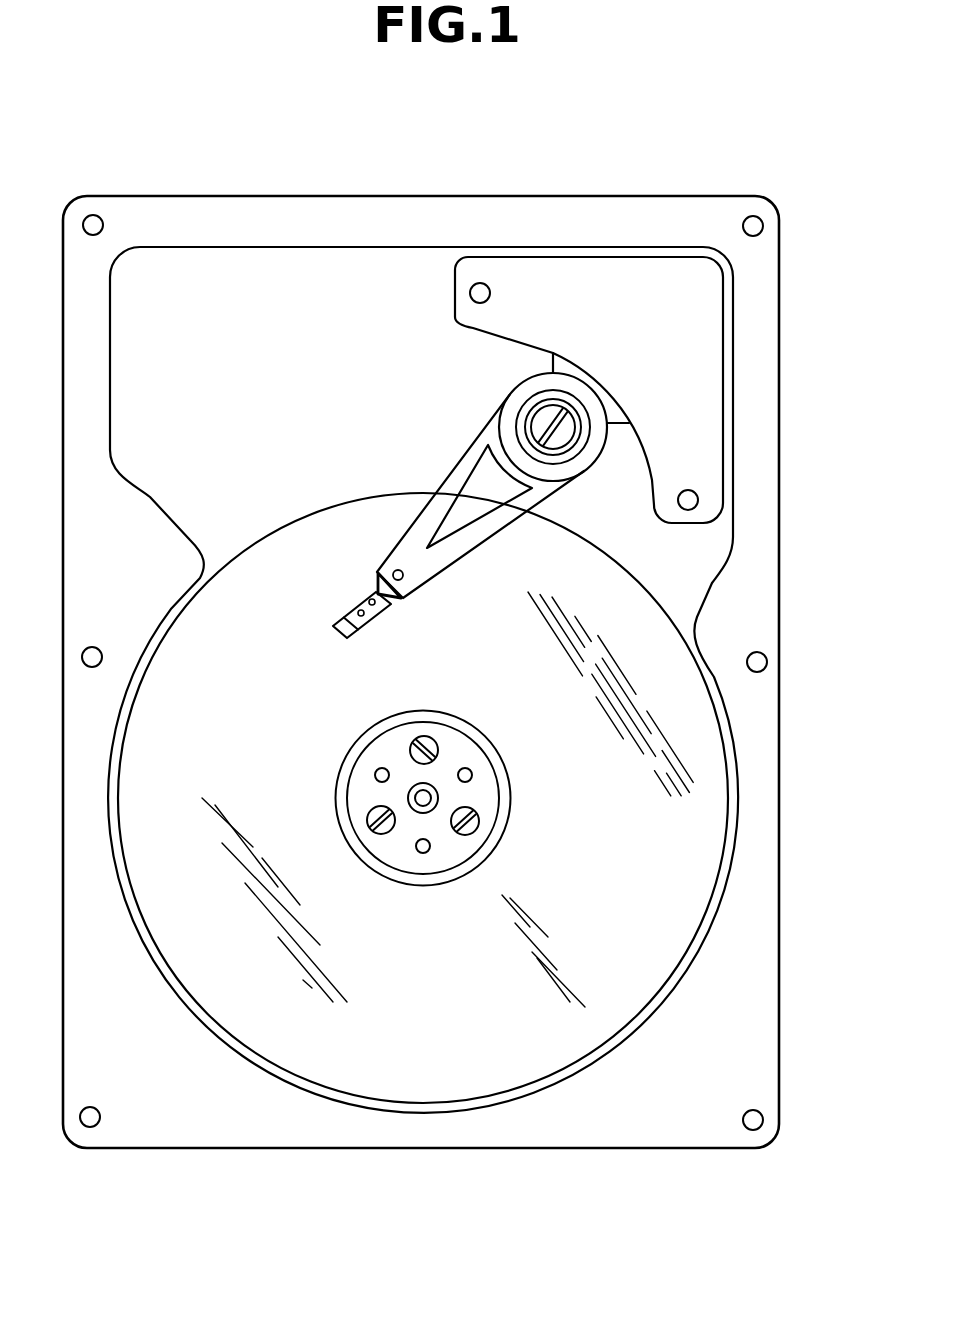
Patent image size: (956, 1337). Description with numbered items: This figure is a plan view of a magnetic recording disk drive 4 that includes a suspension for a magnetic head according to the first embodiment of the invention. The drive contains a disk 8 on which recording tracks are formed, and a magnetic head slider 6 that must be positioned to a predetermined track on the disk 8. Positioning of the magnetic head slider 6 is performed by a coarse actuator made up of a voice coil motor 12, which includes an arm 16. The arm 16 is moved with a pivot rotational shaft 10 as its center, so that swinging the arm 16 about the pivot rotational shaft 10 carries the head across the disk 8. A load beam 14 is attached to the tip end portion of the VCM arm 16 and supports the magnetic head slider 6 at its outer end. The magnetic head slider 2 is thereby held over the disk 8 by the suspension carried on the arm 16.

The magnetic head slider 2 is at (358, 593).
The magnetic recording disk drive 4 is at (203, 1148).
The magnetic head slider 6 is at (321, 647).
The disk 8 is at (640, 811).
The pivot rotational shaft 10 is at (565, 430).
The voice coil motor (VCM) 12 is at (514, 351).
The load beam 14 is at (385, 610).
The arm 16 is at (470, 446).